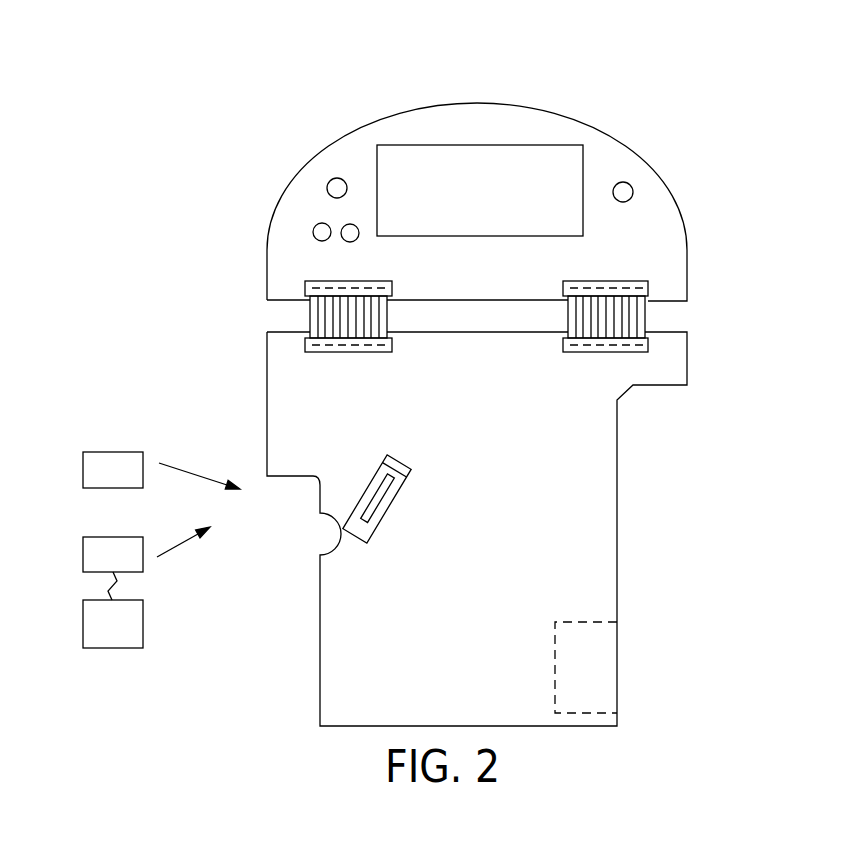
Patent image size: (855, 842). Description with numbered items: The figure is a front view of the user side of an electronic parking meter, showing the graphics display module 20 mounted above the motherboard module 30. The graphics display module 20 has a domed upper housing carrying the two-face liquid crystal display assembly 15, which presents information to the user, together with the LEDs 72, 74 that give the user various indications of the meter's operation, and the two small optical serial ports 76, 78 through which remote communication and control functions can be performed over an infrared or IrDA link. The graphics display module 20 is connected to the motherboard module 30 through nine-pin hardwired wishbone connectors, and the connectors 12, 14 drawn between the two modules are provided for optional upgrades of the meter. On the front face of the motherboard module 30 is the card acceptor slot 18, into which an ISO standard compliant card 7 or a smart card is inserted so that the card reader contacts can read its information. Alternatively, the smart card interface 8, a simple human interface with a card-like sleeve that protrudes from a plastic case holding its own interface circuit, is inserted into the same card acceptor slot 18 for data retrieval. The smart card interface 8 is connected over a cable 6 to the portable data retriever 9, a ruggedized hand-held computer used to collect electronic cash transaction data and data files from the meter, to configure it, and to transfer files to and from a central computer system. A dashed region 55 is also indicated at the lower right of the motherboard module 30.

The cable 6 is at (111, 591).
The card 7 is at (103, 452).
The smart card interface 8 is at (83, 553).
The portable data retriever 9 is at (100, 648).
The connector 12 is at (332, 317).
The connector 14 is at (615, 320).
The liquid crystal display assembly 15 is at (447, 156).
The card acceptor slot 18 is at (374, 490).
The graphics display module 20 is at (666, 243).
The motherboard module 30 is at (598, 485).
The compartment 55 is at (639, 664).
The LED 72 is at (340, 190).
The LED 74 is at (624, 190).
The optical serial port 76 is at (313, 233).
The optical serial port 78 is at (345, 240).